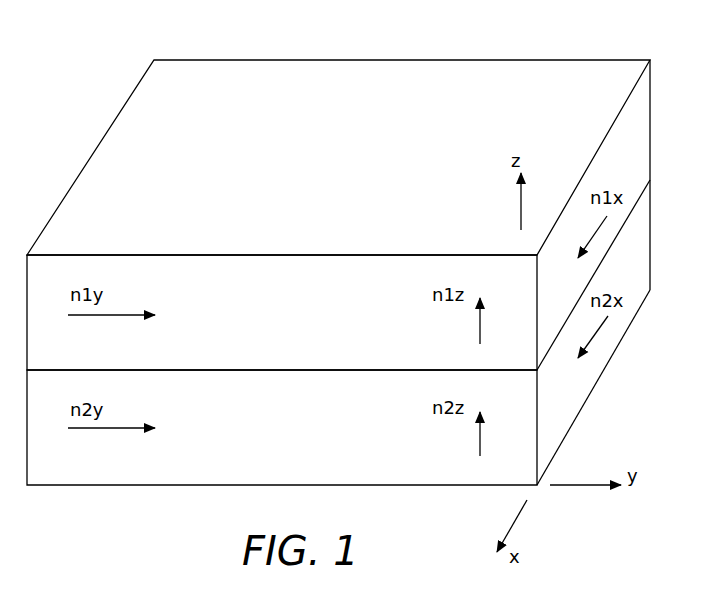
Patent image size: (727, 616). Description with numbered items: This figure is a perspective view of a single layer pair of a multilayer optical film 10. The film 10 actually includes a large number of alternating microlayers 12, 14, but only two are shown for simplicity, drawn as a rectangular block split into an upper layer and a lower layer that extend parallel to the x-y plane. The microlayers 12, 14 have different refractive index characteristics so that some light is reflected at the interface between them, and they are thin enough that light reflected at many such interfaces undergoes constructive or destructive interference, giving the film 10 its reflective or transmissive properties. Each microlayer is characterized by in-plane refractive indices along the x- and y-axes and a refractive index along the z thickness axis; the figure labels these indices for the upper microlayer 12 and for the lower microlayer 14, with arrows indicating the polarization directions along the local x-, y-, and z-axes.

The multilayer optical film 10 is at (364, 244).
The microlayer 12 is at (651, 128).
The microlayer 14 is at (651, 240).